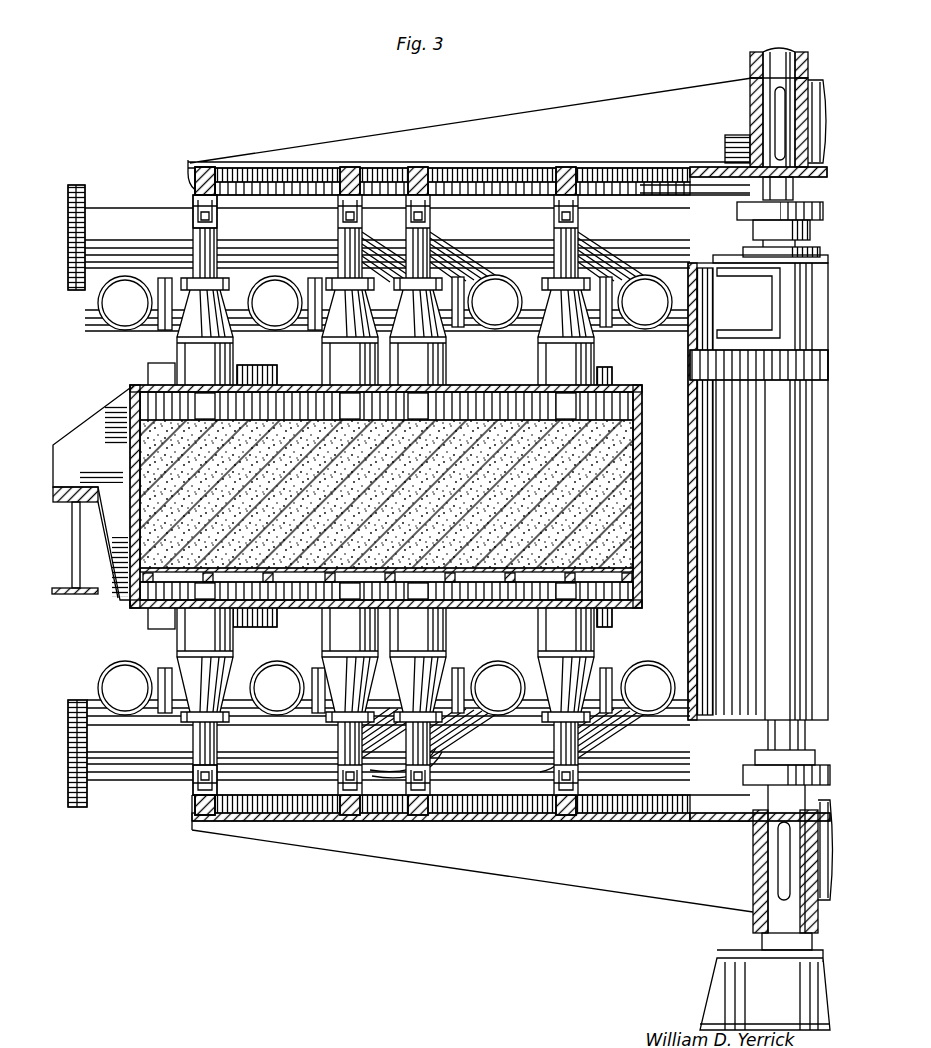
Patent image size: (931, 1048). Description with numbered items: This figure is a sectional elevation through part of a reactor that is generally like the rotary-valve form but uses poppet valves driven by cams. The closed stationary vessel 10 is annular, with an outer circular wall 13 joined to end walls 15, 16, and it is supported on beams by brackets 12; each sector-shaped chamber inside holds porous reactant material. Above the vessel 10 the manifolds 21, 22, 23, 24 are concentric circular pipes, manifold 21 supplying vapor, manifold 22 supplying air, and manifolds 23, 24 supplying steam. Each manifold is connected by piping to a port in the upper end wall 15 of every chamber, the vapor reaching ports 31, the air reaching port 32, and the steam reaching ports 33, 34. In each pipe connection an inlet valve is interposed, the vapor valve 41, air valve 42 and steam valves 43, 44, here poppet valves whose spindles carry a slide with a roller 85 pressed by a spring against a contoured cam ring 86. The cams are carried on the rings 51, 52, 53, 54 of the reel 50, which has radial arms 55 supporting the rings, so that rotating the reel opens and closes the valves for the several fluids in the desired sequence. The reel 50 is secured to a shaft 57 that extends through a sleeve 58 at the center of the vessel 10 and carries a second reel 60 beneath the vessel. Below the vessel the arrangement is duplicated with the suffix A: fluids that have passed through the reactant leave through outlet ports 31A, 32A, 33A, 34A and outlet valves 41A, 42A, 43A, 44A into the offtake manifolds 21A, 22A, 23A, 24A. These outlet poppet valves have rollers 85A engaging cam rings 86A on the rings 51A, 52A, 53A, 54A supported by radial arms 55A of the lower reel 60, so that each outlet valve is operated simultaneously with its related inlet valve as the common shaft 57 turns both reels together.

The closed stationary vessel 10 is at (127, 611).
The bracket 12 is at (63, 486).
The outer circular wall 13 is at (148, 452).
The end wall 15 is at (287, 390).
The end wall 16 is at (447, 601).
The vapor manifold 21 is at (135, 303).
The air manifold 22 is at (487, 302).
The steam manifold 23 is at (285, 303).
The steam manifold 24 is at (636, 302).
The offtake manifold 21A is at (135, 688).
The offtake manifold 22A is at (488, 688).
The offtake manifold 23A is at (287, 688).
The offtake manifold 24A is at (637, 688).
The port 31 is at (203, 400).
The port 32 is at (405, 392).
The port 33 is at (360, 396).
The port 34 is at (568, 372).
The outlet port 31A is at (233, 641).
The outlet port 32A is at (436, 626).
The outlet port 33A is at (337, 633).
The outlet port 34A is at (590, 628).
The vapor valve 41 is at (205, 277).
The inlet valve 42 is at (418, 277).
The inlet valve 43 is at (350, 277).
The inlet valve 44 is at (566, 277).
The outlet valve 41A is at (196, 672).
The outlet valve 42A is at (435, 668).
The outlet valve 43A is at (343, 687).
The outlet valve 44A is at (585, 669).
The reel 50 is at (538, 99).
The ring 51 is at (212, 166).
The ring 52 is at (422, 170).
The ring 53 is at (362, 170).
The ring 54 is at (566, 172).
The radial arm 55 is at (658, 170).
The ring 51A is at (192, 818).
The ring 52A is at (423, 814).
The ring 53A is at (354, 816).
The ring 54A is at (567, 820).
The radial arm 55A is at (667, 810).
The shaft 57 is at (766, 572).
The sleeve 58 is at (705, 501).
The second reel 60 is at (523, 862).
The roller 85 is at (193, 216).
The cam ring 86 is at (193, 185).
The roller 85A is at (193, 784).
The cam ring 86A is at (196, 804).